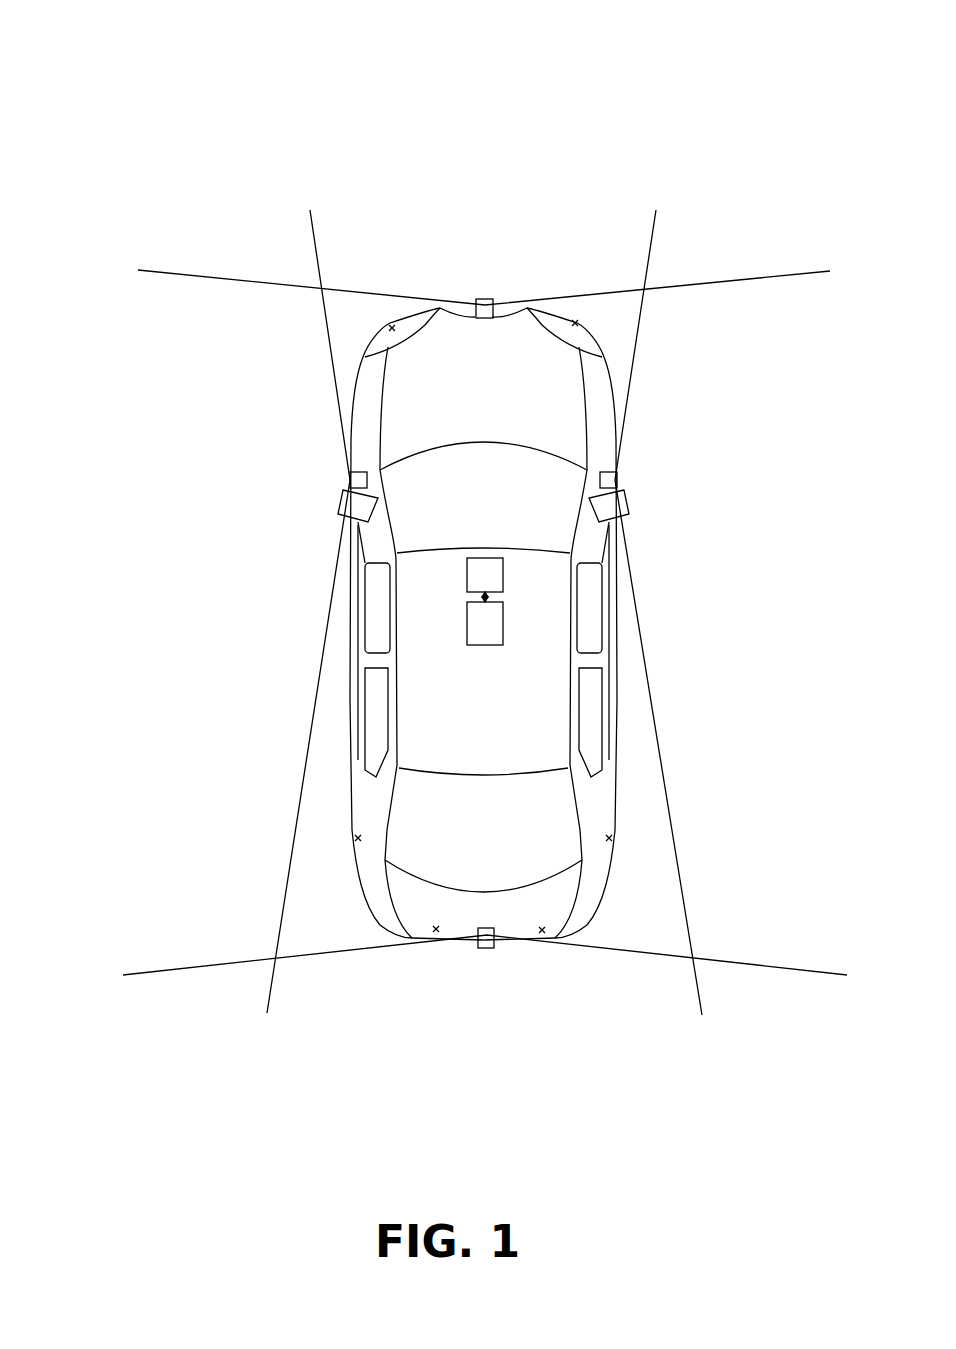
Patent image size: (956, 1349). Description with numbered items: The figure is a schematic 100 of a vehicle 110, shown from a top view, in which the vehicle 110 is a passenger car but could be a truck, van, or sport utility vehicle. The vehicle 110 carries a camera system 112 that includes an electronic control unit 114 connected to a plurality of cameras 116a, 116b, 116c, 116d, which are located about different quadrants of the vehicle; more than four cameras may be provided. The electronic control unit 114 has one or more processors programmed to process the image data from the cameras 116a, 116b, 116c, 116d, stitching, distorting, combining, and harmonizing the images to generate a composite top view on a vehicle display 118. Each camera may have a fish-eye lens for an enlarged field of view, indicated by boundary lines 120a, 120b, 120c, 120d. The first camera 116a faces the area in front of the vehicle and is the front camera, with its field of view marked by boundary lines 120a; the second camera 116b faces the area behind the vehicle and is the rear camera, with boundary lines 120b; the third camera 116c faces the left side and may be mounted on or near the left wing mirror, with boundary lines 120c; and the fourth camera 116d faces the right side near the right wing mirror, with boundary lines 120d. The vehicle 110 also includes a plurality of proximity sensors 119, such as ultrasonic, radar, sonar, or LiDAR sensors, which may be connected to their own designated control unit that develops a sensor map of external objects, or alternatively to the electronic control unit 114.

The schematic 100 is at (104, 98).
The vehicle 110 is at (562, 408).
The camera system 112 is at (426, 583).
The electronic control unit 114 is at (503, 620).
The first camera 116a is at (477, 300).
The second camera 116b is at (495, 940).
The third camera 116c is at (352, 470).
The fourth camera 116d is at (617, 468).
The vehicle display 118 is at (503, 572).
The proximity sensors 119 is at (576, 324).
The boundary lines 120a is at (213, 278).
The boundary lines 120b is at (200, 966).
The boundary lines 120c is at (315, 232).
The boundary lines 120d is at (657, 231).